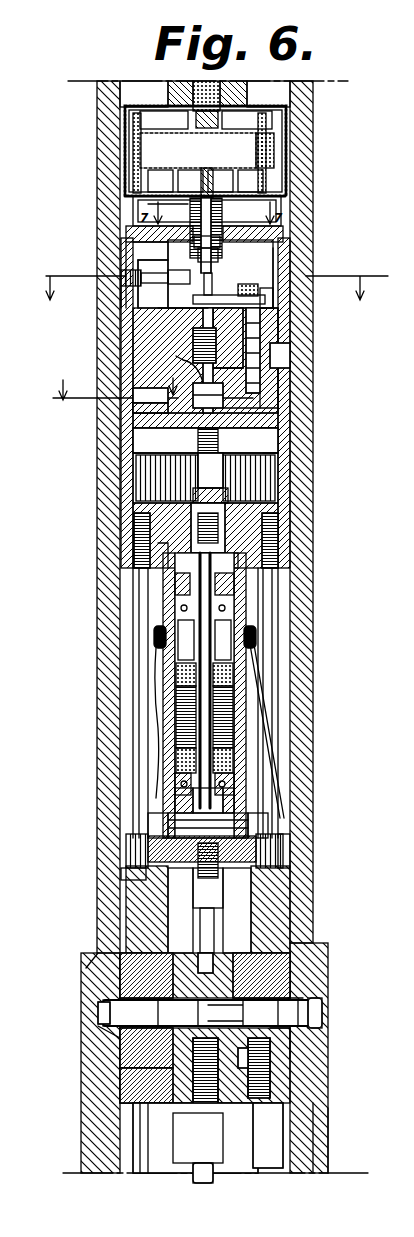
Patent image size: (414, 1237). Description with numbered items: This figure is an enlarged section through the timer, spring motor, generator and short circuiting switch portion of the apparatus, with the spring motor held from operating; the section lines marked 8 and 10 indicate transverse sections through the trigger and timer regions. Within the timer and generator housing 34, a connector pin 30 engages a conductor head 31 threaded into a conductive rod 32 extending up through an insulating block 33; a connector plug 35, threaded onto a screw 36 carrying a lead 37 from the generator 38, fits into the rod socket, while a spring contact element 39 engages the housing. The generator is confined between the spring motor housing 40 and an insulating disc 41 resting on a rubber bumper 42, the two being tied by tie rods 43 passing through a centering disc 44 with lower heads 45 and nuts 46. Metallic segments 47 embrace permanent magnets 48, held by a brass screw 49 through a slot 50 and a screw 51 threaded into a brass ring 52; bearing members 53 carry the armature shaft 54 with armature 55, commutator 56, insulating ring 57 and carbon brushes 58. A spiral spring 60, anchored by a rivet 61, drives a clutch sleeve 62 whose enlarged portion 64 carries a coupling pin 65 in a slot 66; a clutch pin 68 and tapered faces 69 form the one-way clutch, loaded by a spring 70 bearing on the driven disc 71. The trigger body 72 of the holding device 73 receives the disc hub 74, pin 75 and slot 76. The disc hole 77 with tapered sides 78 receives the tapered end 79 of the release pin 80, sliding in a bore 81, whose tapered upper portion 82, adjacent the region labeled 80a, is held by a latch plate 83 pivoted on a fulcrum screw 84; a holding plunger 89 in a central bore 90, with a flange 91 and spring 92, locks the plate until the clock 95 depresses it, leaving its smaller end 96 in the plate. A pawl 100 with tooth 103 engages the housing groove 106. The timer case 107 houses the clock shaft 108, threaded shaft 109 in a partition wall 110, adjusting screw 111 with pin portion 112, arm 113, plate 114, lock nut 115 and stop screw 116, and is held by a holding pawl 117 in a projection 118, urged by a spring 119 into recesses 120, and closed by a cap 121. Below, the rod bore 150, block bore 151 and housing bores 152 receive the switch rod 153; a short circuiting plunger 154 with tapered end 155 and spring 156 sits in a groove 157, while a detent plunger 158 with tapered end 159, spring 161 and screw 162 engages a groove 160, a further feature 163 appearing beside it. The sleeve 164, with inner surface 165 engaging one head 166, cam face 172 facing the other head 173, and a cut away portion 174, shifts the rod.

The section line 8 is at (113, 381).
The section line 10 is at (210, 278).
The connector pin 30 is at (186, 1170).
The conductor head 31 is at (178, 1144).
The conductive rod 32 is at (210, 938).
The insulating block 33 is at (110, 1055).
The timer and generator housing 34 is at (88, 613).
The connector plug 35 is at (208, 888).
The screw 36 is at (186, 860).
The lead 37 is at (150, 716).
The generator 38 is at (248, 702).
The spring contact element 39 is at (252, 726).
The spring motor housing 40 is at (128, 506).
The insulating disc 41 is at (280, 853).
The rubber bumper 42 is at (122, 886).
The tie rods 43 is at (128, 760).
The annular centering disc 44 is at (240, 812).
The lower heads 45 is at (125, 856).
The nuts 46 is at (133, 832).
The metallic segments 47 is at (165, 742).
The annular permanent magnets 48 is at (162, 795).
The brass screw 49 is at (205, 800).
The transverse slot 50 is at (230, 792).
The screw 51 is at (140, 530).
The brass ring 52 is at (165, 545).
The bearing members 53 is at (168, 780).
The armature shaft 54 is at (185, 568).
The armature 55 is at (180, 700).
The commutator 56 is at (182, 648).
The insulating ring 57 is at (212, 657).
The carbon brushes 58 is at (176, 636).
The spiral spring 60 is at (258, 452).
The rivet 61 is at (265, 470).
The driving clutch sleeve 62 is at (222, 434).
The enlarged lower portion 64 is at (150, 500).
The transverse coupling pin 65 is at (245, 527).
The transverse slot 66 is at (205, 512).
The clutch pin 68 is at (150, 480).
The tapered faces 69 is at (190, 452).
The spring 70 is at (182, 432).
The driven disc 71 is at (145, 407).
The trigger body 72 is at (272, 350).
The trigger or holding device 73 is at (278, 342).
The hub portion 74 is at (216, 395).
The transversely extending pin 75 is at (188, 366).
The transverse slot 76 is at (228, 375).
The longitudinally extending hole 77 is at (255, 430).
The tapered upper sides 78 is at (248, 406).
The tapered lower end 79 is at (245, 393).
The release pin or detent 80 is at (205, 360).
The wall 80a is at (265, 284).
The bore 81 is at (258, 318).
The tapered upper portion 82 is at (262, 298).
The latch plate 83 is at (208, 280).
The fulcrum screw 84 is at (250, 281).
The holding plunger 89 is at (185, 311).
The central bore 90 is at (186, 328).
The flange 91 is at (185, 290).
The helical spring 92 is at (220, 360).
The clock or timing device 95 is at (132, 146).
The smaller end 96 is at (179, 277).
The holding dog or pawl 100 is at (145, 397).
The tooth 103 is at (150, 388).
The annular groove 106 is at (250, 382).
The timer case 107 is at (272, 230).
The driven shaft 108 is at (205, 158).
The threaded shaft 109 is at (293, 167).
The partition wall 110 is at (268, 242).
The adjusting screw 111 is at (169, 212).
The lower pin portion 112 is at (186, 252).
The arm 113 is at (128, 240).
The plate 114 is at (214, 243).
The lock nut 115 is at (212, 257).
The stop screw 116 is at (128, 230).
The holding pawl or detent 117 is at (130, 276).
The upper projection 118 is at (122, 284).
The helical spring 119 is at (128, 262).
The holes or recesses 120 is at (118, 272).
The cap 121 is at (262, 100).
The transverse bore 150 is at (206, 986).
The transverse bore 151 is at (138, 986).
The transverse bores 152 is at (80, 985).
The switch rod 153 is at (90, 1030).
The short circuiting plunger 154 is at (146, 1084).
The tapered end 155 is at (146, 1048).
The helical spring 156 is at (182, 1070).
The circumferential groove 157 is at (210, 1013).
The plunger detent 158 is at (260, 1080).
The tapered end 159 is at (282, 1050).
The circumferential groove 160 is at (292, 998).
The spring 161 is at (265, 1094).
The screw 162 is at (258, 1115).
The shoulder 163 is at (285, 1008).
The sleeve 164 is at (310, 1118).
The cylindrical inner surface 165 is at (306, 1143).
The head 166 is at (90, 1002).
The cam face 172 is at (314, 985).
The head 173 is at (312, 1025).
The cut away portion 174 is at (78, 948).